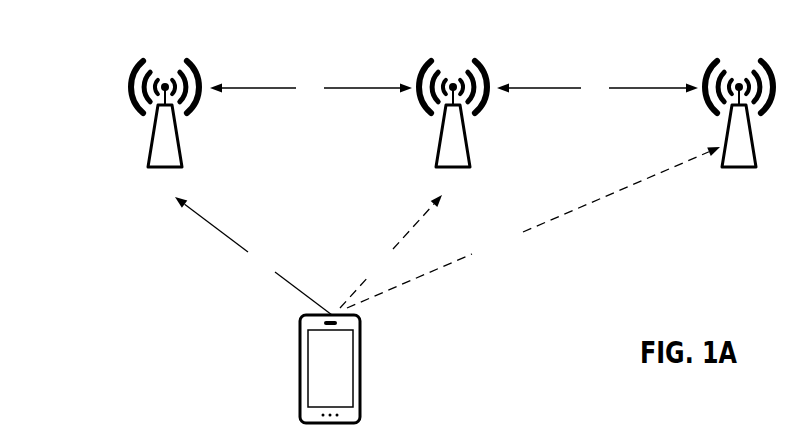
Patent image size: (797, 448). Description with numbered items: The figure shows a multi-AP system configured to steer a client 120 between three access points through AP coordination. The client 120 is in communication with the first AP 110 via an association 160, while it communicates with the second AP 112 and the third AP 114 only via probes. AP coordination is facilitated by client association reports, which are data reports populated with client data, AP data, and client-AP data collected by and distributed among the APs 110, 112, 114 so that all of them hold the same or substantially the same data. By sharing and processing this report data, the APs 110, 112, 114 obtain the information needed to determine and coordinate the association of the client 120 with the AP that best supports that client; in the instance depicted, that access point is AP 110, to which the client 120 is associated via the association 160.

The AP 110 is at (165, 128).
The AP 112 is at (453, 128).
The AP 114 is at (739, 128).
The client 120 is at (318, 375).
The association 160 is at (239, 277).